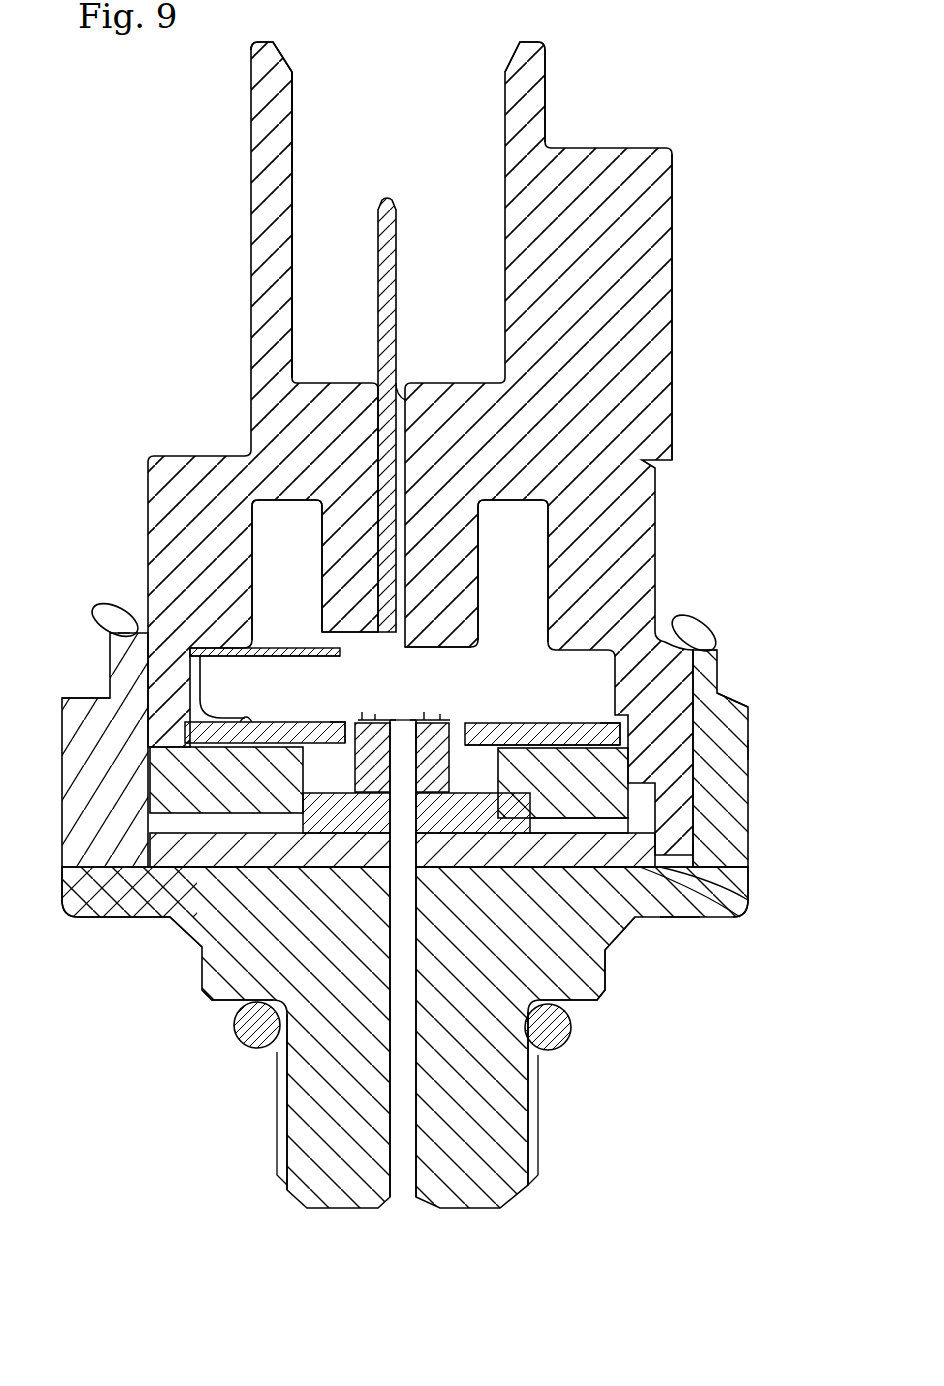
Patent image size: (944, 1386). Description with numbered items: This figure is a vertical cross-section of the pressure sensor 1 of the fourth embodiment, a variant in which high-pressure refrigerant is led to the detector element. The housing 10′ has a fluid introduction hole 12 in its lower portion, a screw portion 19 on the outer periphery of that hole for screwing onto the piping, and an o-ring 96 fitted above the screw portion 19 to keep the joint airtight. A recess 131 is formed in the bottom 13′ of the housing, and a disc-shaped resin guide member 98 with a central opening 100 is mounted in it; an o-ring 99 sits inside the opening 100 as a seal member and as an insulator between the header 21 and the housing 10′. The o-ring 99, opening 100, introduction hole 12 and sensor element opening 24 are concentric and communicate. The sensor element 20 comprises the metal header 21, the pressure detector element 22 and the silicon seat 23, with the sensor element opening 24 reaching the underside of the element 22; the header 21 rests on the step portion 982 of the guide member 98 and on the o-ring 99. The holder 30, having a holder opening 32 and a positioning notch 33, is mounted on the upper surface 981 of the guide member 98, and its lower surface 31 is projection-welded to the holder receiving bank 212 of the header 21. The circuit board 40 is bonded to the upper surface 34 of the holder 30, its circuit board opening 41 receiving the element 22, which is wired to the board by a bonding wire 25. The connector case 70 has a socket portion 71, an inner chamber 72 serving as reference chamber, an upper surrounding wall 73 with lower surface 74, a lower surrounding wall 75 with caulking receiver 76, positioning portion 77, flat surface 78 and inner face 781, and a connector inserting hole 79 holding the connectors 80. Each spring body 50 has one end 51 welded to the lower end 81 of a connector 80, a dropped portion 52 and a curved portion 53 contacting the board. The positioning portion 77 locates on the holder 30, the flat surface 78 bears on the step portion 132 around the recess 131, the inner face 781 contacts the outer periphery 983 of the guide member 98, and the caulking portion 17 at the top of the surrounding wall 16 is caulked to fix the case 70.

The pressure sensor 1 is at (432, 86).
The socket portion 71 is at (540, 90).
The connectors 80 is at (392, 290).
The connector inserting hole 79 is at (407, 395).
The connector case 70 is at (706, 374).
The upper surrounding wall 73 is at (150, 510).
The caulking receiver 76 is at (133, 618).
The caulking portion 17 is at (92, 609).
The lower surrounding wall 75 is at (115, 680).
The lower end of connector 81 is at (350, 630).
The lower surface of upper surrounding wall 74 is at (245, 640).
The one end of spring body 51 is at (305, 650).
The connector case inner chamber 72 is at (515, 645).
The dropped portion 52 is at (200, 680).
The curved portion 53 is at (247, 716).
The spring body 50 is at (300, 657).
The upper surface of holder 34 is at (298, 722).
The circuit board opening 41 is at (342, 724).
The pressure detector element 22 is at (362, 716).
The sensor element 20 is at (406, 716).
The opening 100 is at (420, 726).
The bonding wire 25 is at (480, 723).
The holder opening 32 is at (492, 745).
The circuit board 40 is at (591, 720).
The holder 30 is at (142, 785).
The silicon seat 23 is at (355, 760).
The lower surface of holder 31 is at (345, 805).
The surrounding wall 16 is at (95, 822).
The step portion 132 is at (125, 858).
The recess 131 is at (72, 902).
The guide member 98 is at (110, 918).
The bottom of housing 13′ is at (140, 918).
The holder receiving bank 212 is at (190, 930).
The o-ring 99 is at (222, 1004).
The housing 10′ is at (152, 1033).
The o-ring 96 is at (244, 1045).
The screw portion 19 is at (283, 1132).
The fluid introduction hole 12 is at (408, 1165).
The metal header 21 is at (400, 862).
The sensor element opening 24 is at (372, 866).
The positioning portion 77 is at (720, 752).
The positioning notch 33 is at (705, 790).
The inner face of lower surrounding wall 781 is at (700, 838).
The flat surface 78 is at (705, 870).
The upper surface of guide member 981 is at (640, 905).
The step portion of guide member 982 is at (620, 940).
The outer periphery of guide member 983 is at (695, 920).